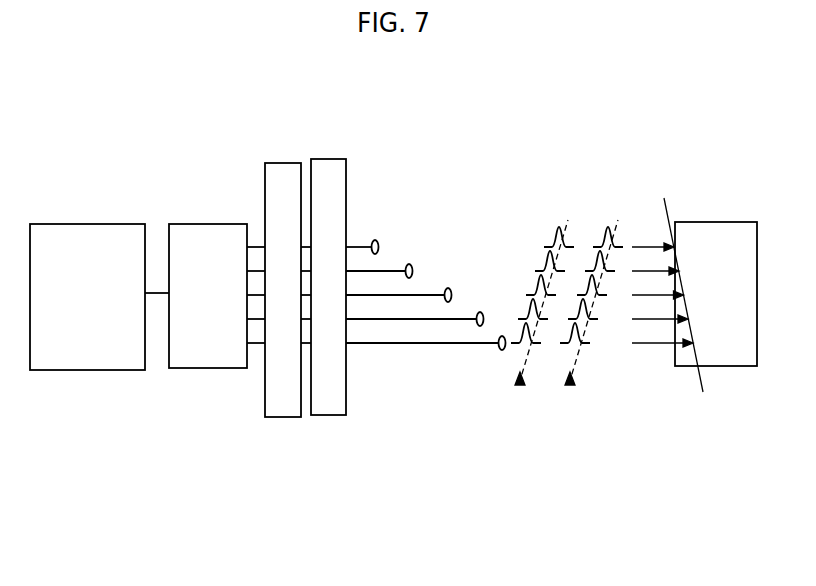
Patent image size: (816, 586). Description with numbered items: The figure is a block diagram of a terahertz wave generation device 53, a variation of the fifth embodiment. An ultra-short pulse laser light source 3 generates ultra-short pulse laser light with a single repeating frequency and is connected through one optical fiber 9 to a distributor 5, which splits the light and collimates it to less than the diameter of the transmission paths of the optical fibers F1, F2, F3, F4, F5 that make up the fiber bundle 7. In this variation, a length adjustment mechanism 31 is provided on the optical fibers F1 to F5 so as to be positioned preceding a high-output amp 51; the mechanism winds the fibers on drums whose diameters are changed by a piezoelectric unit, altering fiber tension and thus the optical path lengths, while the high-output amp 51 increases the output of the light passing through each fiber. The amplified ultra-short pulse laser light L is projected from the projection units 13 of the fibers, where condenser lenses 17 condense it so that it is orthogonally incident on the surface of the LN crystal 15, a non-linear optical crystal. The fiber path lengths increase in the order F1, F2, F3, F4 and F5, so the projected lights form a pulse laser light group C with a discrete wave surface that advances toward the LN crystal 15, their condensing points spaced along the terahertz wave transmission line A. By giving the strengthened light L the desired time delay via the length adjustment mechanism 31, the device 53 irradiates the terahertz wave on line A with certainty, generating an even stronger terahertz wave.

The terahertz wave generation device 53 is at (165, 170).
The ultra-short pulse laser light source 3 is at (55, 371).
The optical fiber 9 is at (157, 294).
The distributor 5 is at (218, 369).
The length adjustment mechanism 31 is at (285, 418).
The high-output amp 51 is at (340, 416).
The fiber bundle 7 is at (328, 108).
The projection unit 13 is at (498, 335).
The condenser lens 17 is at (501, 351).
The LN crystal 15 is at (685, 367).
The optical fiber F1 is at (359, 246).
The optical fiber F2 is at (383, 270).
The optical fiber F3 is at (405, 294).
The optical fiber F4 is at (412, 318).
The optical fiber F5 is at (440, 342).
The ultra-short pulse laser light L is at (522, 336).
The pulse laser light group C is at (517, 387).
The terahertz wave transmission line A is at (689, 304).